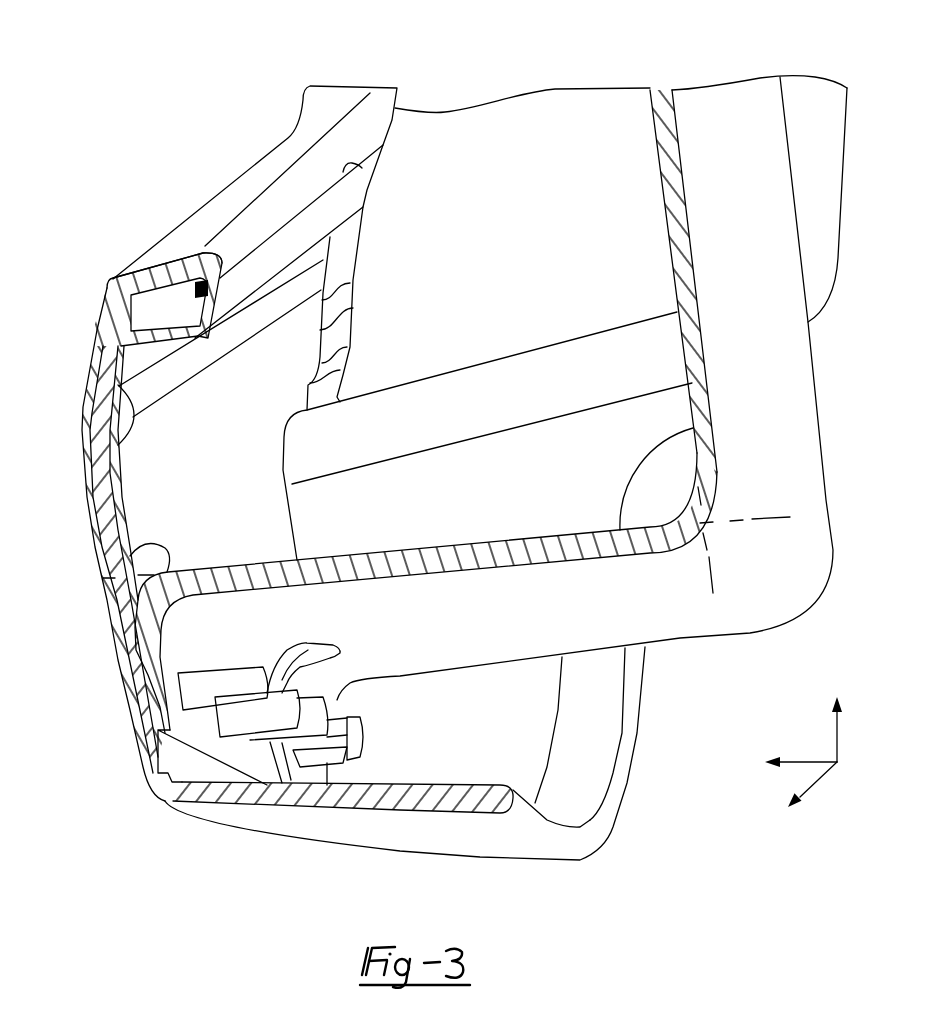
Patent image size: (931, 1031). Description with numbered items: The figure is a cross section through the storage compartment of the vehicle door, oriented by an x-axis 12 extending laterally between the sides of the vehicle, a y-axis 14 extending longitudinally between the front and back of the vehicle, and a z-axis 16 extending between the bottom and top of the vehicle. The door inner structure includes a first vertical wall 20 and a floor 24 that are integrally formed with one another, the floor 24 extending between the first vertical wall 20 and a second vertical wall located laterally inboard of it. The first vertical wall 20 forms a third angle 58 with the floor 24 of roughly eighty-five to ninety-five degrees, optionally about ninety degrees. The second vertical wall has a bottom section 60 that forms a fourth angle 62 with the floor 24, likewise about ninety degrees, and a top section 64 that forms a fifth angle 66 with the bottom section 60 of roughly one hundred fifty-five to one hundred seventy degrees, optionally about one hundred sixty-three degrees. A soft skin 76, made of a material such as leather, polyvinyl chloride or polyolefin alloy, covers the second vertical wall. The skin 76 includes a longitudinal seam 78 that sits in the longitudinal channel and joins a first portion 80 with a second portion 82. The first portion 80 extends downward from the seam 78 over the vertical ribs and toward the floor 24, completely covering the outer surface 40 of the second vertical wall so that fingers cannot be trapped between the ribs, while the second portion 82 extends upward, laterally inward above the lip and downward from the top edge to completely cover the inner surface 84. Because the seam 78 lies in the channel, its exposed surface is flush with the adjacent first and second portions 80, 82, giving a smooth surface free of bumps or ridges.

The x-axis 12 is at (793, 768).
The y-axis 14 is at (818, 784).
The z-axis 16 is at (835, 728).
The first vertical wall 20 is at (650, 133).
The floor 24 is at (400, 551).
The outer surface 40 is at (118, 462).
The third angle 58 is at (623, 484).
The bottom section 60 is at (108, 546).
The fourth angle 62 is at (166, 556).
The top section 64 is at (104, 310).
The fifth angle 66 is at (134, 424).
The skin 76 is at (150, 268).
The longitudinal seam 78 is at (362, 168).
The first portion 80 is at (207, 322).
The second portion 82 is at (92, 472).
The inner surface 84 is at (97, 576).